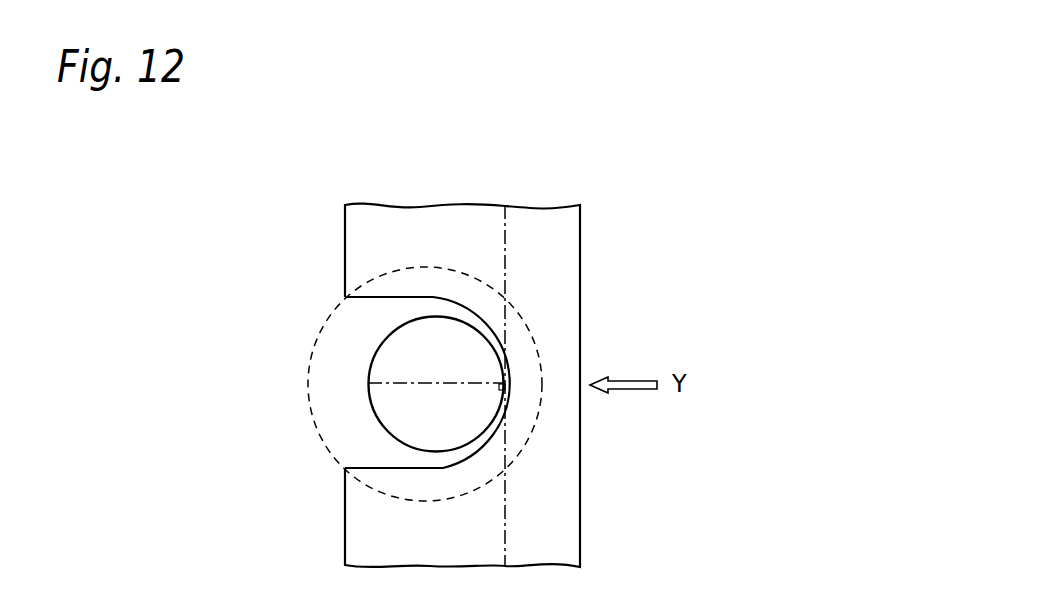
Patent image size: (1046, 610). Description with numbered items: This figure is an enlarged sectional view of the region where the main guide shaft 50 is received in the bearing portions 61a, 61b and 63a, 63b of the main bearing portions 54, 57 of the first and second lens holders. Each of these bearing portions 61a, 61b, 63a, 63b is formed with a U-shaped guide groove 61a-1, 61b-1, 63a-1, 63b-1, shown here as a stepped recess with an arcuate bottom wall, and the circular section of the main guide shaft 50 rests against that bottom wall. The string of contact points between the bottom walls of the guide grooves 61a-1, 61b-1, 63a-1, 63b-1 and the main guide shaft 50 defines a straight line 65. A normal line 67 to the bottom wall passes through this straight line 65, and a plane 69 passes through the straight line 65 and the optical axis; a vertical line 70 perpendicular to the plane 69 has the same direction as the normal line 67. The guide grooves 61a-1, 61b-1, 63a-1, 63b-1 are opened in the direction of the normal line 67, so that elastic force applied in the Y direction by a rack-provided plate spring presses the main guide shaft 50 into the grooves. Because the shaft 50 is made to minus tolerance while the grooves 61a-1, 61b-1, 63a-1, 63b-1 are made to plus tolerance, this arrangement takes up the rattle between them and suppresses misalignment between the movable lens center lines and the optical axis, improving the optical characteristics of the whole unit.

The main guide shaft 50 is at (387, 340).
The main bearing portion 54 is at (526, 385).
The main bearing portion 57 is at (580, 263).
The bearing portion 61a is at (326, 384).
The bearing portion 61b is at (326, 384).
The bearing portion 63a is at (326, 384).
The bearing portion 63b is at (307, 390).
The U-shaped guide groove 61a-1 is at (270, 313).
The U-shaped guide groove 61b-1 is at (270, 313).
The U-shaped guide groove 63a-1 is at (270, 313).
The U-shaped guide groove 63b-1 is at (391, 298).
The straight line 65 is at (505, 383).
The normal line 67 is at (362, 427).
The vertical line 70 is at (428, 392).
The plane 69 is at (510, 503).